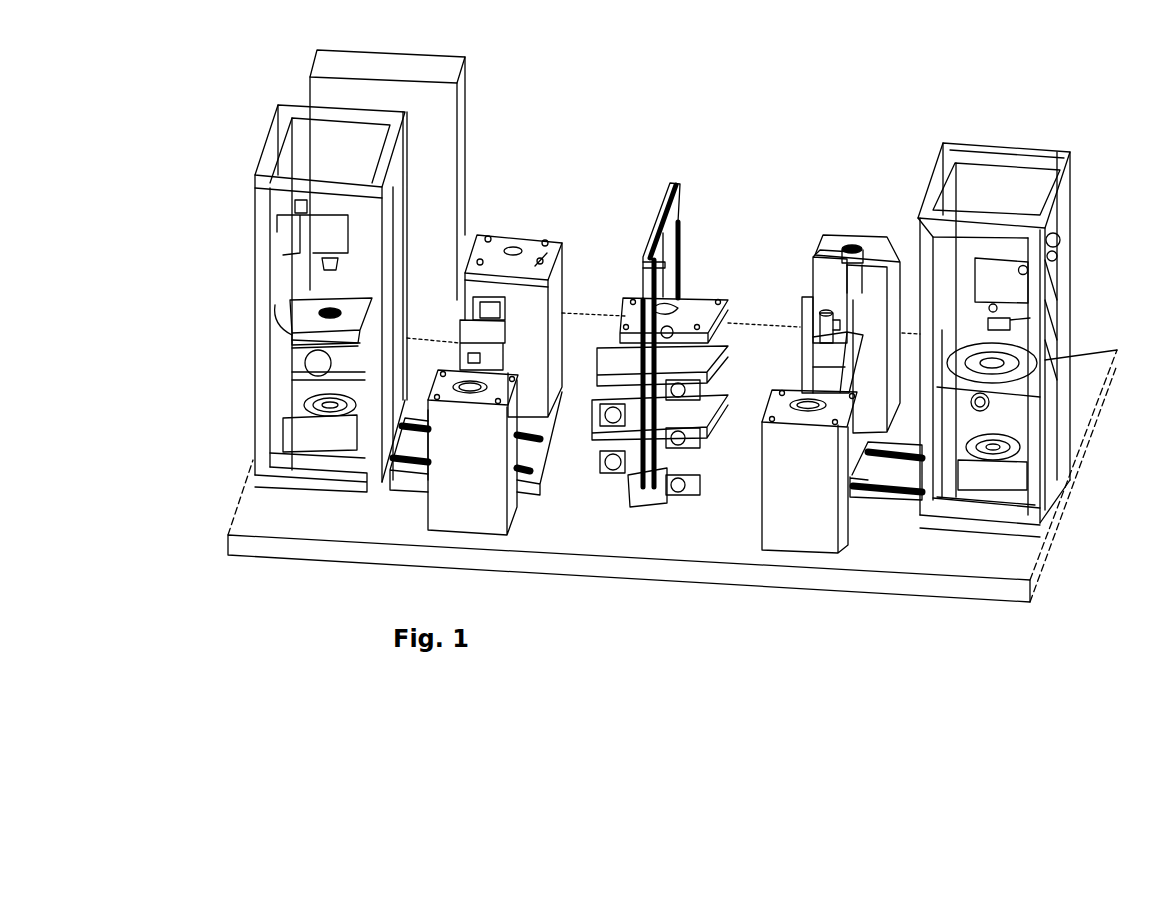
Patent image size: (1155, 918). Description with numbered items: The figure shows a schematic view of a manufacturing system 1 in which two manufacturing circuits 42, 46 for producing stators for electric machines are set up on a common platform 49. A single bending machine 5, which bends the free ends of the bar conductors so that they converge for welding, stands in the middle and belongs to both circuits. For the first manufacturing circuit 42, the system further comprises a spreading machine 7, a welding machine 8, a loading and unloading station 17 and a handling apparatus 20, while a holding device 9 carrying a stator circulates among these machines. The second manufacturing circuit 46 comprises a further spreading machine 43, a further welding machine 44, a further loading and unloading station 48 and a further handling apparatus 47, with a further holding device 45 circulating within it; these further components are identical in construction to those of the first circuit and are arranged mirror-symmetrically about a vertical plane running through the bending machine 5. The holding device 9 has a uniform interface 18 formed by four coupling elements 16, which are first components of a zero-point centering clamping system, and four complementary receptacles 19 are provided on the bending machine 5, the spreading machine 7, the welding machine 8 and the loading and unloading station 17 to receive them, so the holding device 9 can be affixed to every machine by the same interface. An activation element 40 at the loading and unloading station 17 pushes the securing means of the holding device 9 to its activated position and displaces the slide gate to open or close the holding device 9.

The manufacturing system 1 is at (203, 88).
The bending machine 5 is at (677, 183).
The spreading machine 7 is at (514, 503).
The welding machine 8 is at (272, 158).
The holding device 9 is at (303, 317).
The coupling elements 16 is at (297, 340).
The loading and unloading station 17 is at (532, 237).
The uniform interface 18 is at (325, 347).
The complementary receptacles 19 is at (488, 238).
The handling apparatus 20 is at (512, 328).
The activation element 40 is at (548, 253).
The first manufacturing circuit 42 is at (750, 76).
The further spreading machine 43 is at (773, 498).
The further welding machine 44 is at (1070, 195).
The further holding device 45 is at (877, 247).
The second manufacturing circuit 46 is at (1099, 127).
The further handling apparatus 47 is at (827, 292).
The further loading and unloading station 48 is at (818, 382).
The common platform 49 is at (299, 572).